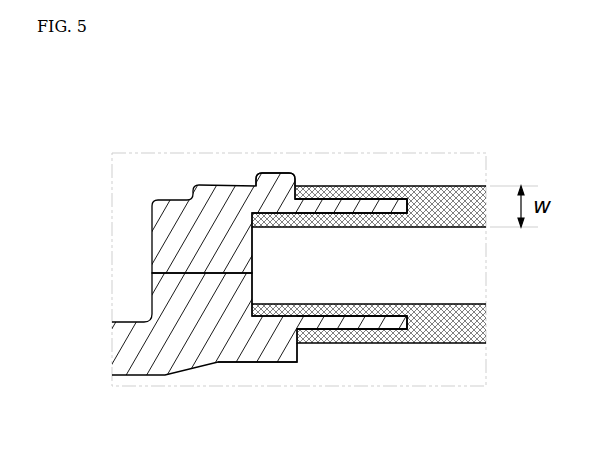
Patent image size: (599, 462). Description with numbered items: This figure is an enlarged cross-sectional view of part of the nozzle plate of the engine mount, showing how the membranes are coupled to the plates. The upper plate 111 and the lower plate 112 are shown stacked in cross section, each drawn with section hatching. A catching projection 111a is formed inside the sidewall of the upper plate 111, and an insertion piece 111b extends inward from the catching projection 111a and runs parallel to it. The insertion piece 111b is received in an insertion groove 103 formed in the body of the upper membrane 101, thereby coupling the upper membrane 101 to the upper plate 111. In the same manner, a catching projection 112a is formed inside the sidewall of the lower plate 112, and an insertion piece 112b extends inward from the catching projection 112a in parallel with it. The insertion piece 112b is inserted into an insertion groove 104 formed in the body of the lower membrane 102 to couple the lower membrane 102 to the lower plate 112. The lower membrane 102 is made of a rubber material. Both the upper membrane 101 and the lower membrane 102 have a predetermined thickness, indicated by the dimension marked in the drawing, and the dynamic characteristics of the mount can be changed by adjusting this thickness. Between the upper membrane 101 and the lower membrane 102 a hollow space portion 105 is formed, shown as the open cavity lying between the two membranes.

The upper membrane 101 is at (468, 193).
The lower membrane 102 is at (468, 336).
The insertion groove 103 is at (416, 193).
The insertion groove 104 is at (410, 331).
The hollow space portion 105 is at (388, 277).
The upper plate 111 is at (160, 229).
The catching projection 111a is at (278, 190).
The insertion piece 111b is at (338, 206).
The lower plate 112 is at (160, 297).
The catching projection 112a is at (253, 352).
The insertion piece 112b is at (338, 323).